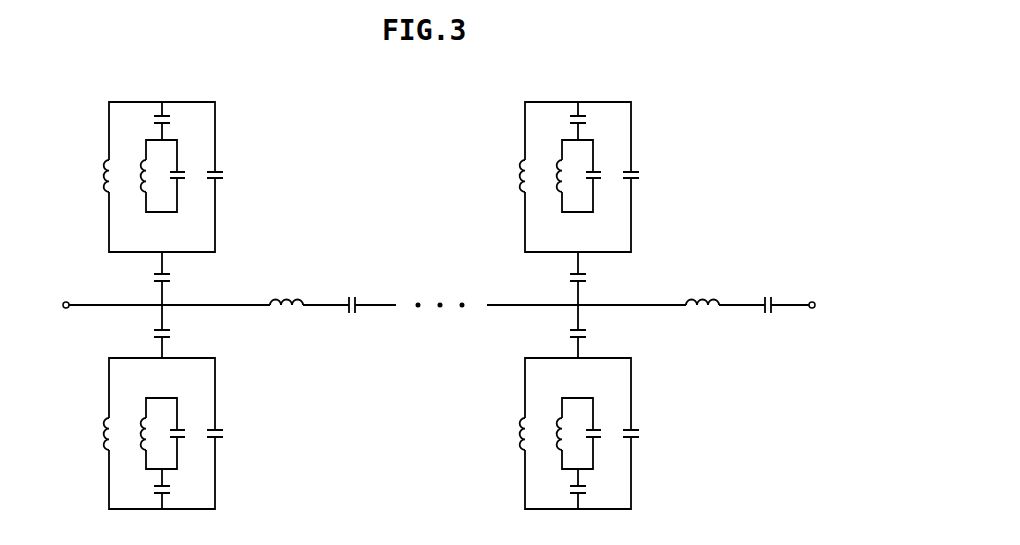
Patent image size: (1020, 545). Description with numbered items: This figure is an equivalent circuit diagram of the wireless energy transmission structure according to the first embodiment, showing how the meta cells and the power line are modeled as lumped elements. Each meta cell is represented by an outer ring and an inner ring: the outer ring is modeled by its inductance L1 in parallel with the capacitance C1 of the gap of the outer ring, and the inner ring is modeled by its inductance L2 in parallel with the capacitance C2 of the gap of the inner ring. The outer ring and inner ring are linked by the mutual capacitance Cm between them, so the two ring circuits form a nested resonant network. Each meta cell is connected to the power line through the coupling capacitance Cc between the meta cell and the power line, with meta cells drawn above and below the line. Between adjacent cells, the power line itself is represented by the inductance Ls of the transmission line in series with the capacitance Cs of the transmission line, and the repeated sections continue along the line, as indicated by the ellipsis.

The inductance of the outer ring L1 is at (301, 305).
The inductance of the inner ring L2 is at (340, 305).
The capacitance of the gap of the outer ring C1 is at (414, 315).
The capacitance of the gap of the inner ring C2 is at (377, 315).
The mutual capacitance Cm is at (356, 306).
The coupling capacitance Cc is at (356, 306).
The inductance of the transmission line Ls is at (494, 292).
The capacitance of the transmission line Cs is at (558, 296).